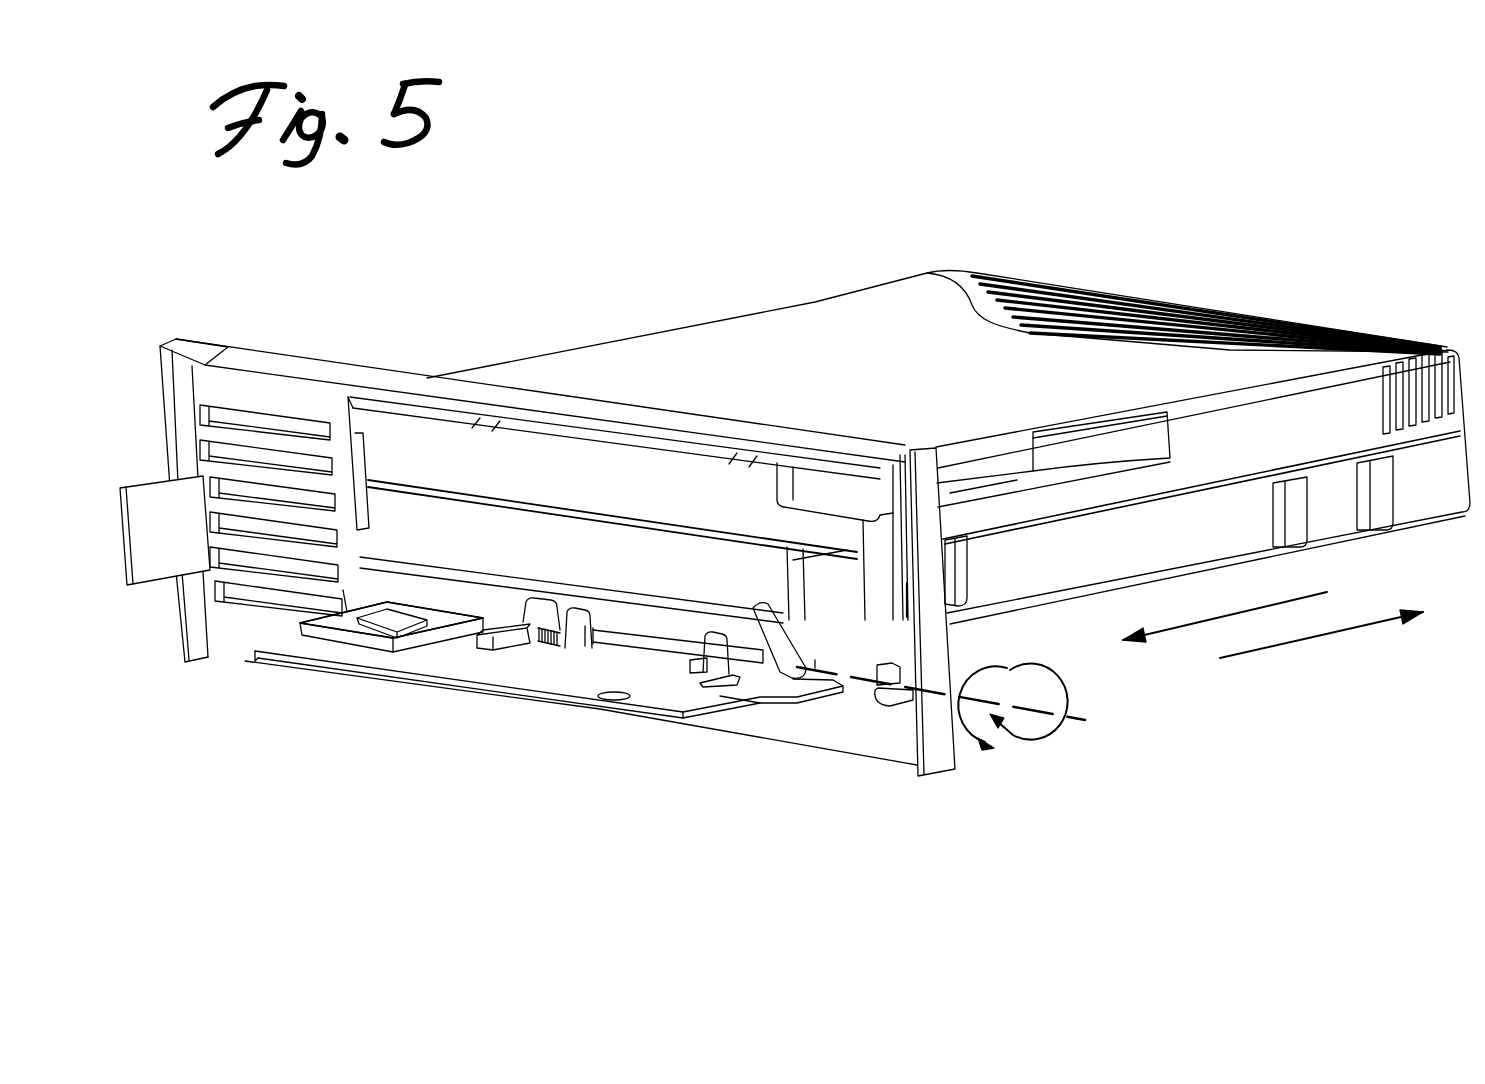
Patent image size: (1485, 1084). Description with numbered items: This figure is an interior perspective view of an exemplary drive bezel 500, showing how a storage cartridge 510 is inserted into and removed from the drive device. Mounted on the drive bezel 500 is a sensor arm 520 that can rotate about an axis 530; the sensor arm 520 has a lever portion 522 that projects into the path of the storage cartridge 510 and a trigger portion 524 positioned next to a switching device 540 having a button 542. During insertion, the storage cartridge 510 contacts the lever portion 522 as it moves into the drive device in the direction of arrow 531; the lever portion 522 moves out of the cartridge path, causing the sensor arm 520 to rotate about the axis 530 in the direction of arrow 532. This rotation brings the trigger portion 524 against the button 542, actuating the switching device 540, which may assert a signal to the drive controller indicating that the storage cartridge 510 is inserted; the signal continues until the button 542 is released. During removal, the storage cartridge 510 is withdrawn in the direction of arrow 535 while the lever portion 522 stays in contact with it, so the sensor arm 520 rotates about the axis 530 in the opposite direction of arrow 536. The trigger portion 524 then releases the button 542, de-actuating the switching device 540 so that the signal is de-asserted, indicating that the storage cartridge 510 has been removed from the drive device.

The drive bezel 500 is at (367, 364).
The storage cartridge 510 is at (828, 292).
The sensor arm 520 is at (620, 628).
The lever portion 522 is at (773, 605).
The trigger portion 524 is at (548, 604).
The axis 530 is at (1073, 720).
The arrow 531 is at (1227, 612).
The arrow 532 is at (980, 664).
The arrow 535 is at (1293, 643).
The arrow 536 is at (1017, 743).
The switching device 540 is at (487, 652).
The button 542 is at (520, 650).